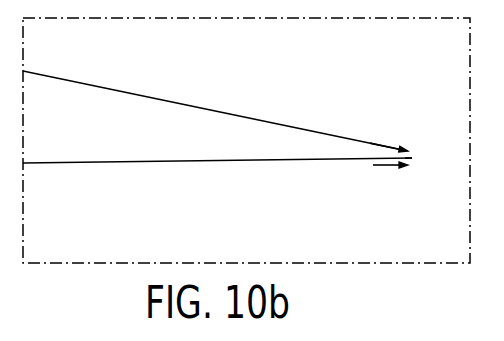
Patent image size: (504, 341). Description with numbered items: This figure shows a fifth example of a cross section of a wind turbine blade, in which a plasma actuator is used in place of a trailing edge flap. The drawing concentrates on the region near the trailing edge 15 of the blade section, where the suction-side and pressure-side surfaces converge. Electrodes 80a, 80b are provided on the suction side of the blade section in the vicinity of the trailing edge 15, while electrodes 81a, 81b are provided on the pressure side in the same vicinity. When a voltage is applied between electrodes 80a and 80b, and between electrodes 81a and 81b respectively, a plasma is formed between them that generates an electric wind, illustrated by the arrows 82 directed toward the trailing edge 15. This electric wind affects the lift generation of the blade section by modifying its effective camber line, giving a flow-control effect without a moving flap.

The trailing edge 15 is at (412, 158).
The electrode 80a is at (354, 140).
The electrode 80b is at (390, 152).
The electrode 81a is at (355, 159).
The electrode 81b is at (392, 164).
The arrows 82 is at (379, 144).